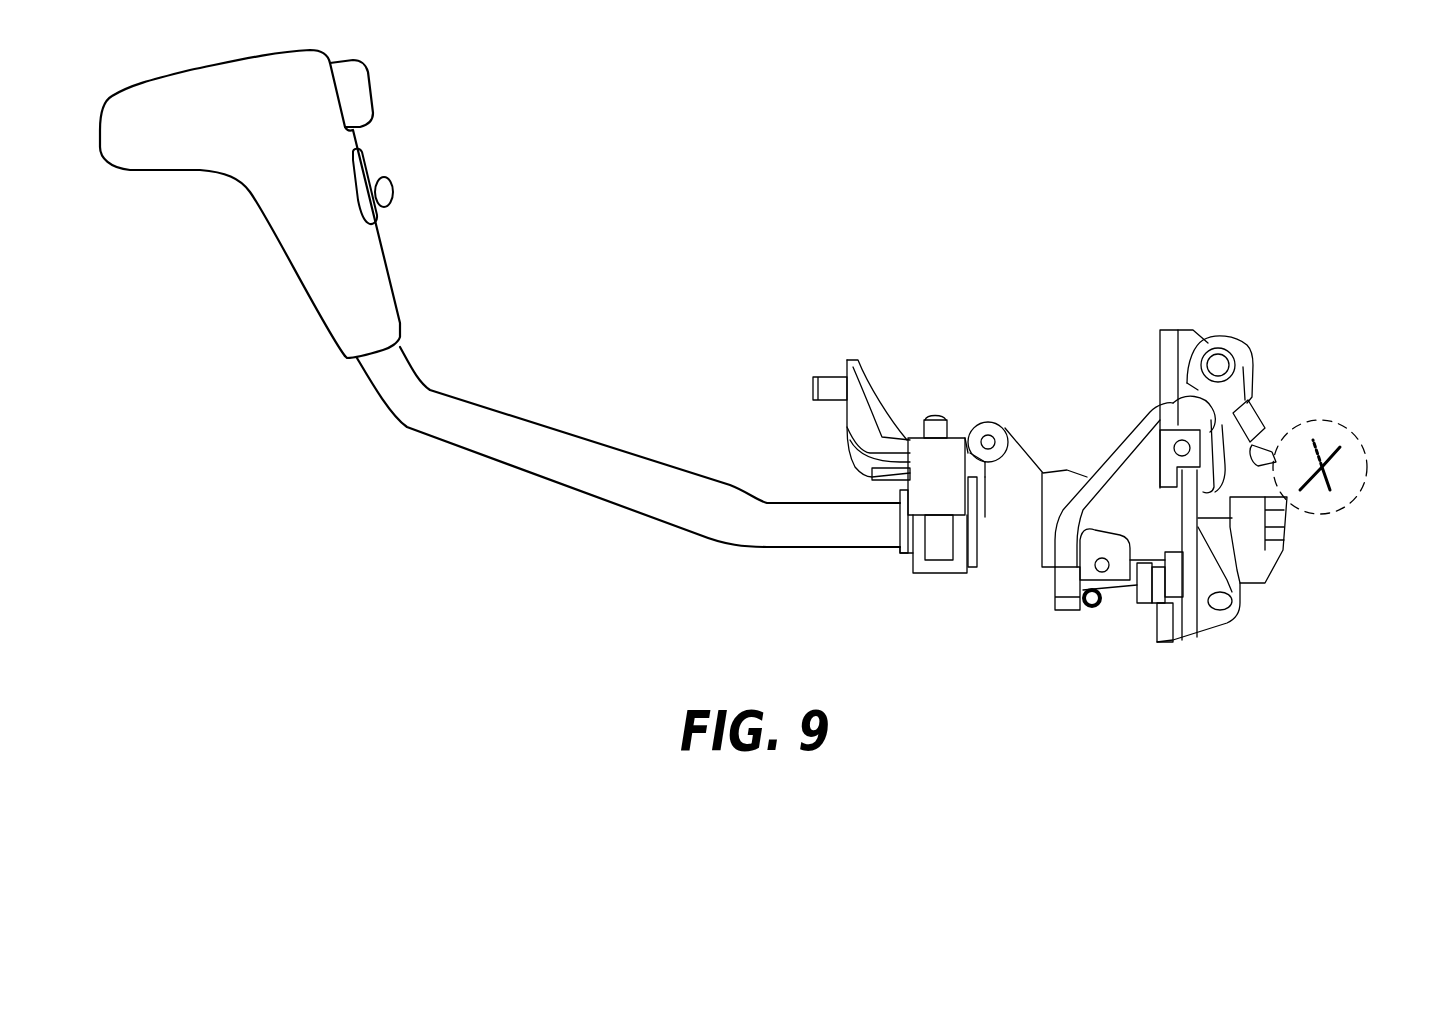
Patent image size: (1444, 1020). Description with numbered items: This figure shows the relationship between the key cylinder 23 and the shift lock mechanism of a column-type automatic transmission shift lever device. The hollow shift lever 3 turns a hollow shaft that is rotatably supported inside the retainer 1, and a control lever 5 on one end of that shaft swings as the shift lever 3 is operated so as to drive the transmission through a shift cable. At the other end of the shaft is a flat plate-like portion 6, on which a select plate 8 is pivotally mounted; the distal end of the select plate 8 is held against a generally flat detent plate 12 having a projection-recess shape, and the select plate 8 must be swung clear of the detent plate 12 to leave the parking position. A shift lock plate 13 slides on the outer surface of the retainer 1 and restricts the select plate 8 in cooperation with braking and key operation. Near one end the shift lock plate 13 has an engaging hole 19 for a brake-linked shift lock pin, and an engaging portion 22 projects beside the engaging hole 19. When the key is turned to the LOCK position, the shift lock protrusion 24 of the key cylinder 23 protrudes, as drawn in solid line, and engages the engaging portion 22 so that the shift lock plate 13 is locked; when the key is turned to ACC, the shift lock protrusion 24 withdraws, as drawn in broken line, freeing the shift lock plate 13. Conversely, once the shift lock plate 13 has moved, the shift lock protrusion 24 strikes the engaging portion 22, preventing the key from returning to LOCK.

The retainer 1 is at (1015, 547).
The shift lever 3 is at (597, 483).
The control lever 5 is at (855, 360).
The flat plate-like portion 6 is at (1205, 617).
The select plate 8 is at (1250, 588).
The detent plate 12 is at (1140, 607).
The shift lock plate 13 is at (1195, 382).
The engaging hole 19 is at (1220, 350).
The engaging portion 22 is at (1262, 407).
The key cylinder 23 is at (1357, 497).
The shift lock protrusion 24 is at (1273, 408).